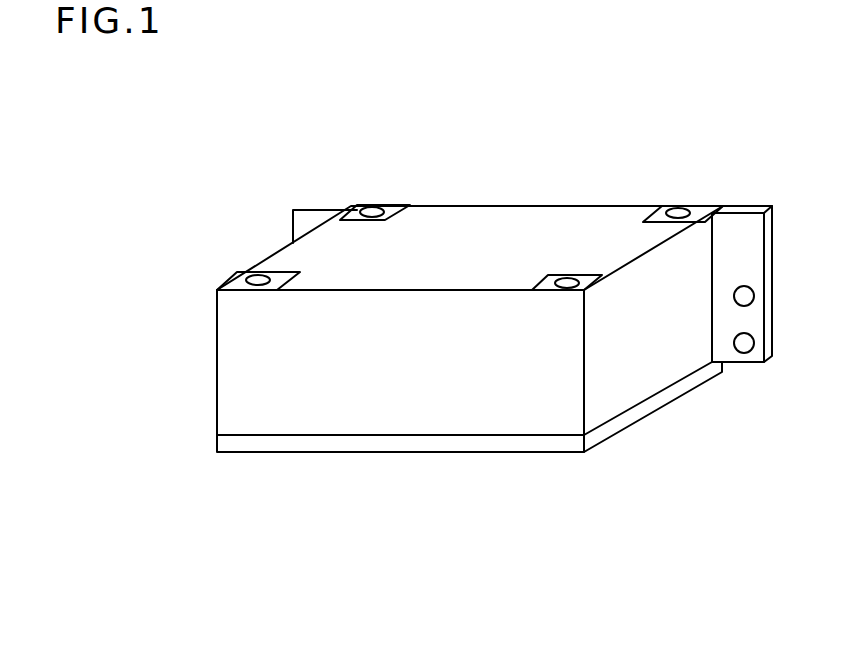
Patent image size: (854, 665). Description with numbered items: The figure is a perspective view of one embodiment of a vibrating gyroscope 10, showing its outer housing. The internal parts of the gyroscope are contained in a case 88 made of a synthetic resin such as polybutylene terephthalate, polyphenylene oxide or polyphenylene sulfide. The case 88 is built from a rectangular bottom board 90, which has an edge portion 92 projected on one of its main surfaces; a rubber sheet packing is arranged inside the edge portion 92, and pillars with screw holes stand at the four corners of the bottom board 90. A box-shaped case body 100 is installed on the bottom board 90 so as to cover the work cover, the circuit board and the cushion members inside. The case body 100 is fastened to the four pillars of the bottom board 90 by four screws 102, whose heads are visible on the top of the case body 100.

The vibrating gyroscope 10 is at (728, 86).
The case 88 is at (434, 331).
The bottom board 90 is at (317, 452).
The edge portion 92 is at (232, 442).
The case body 100 is at (233, 342).
The screws 102 is at (258, 280).